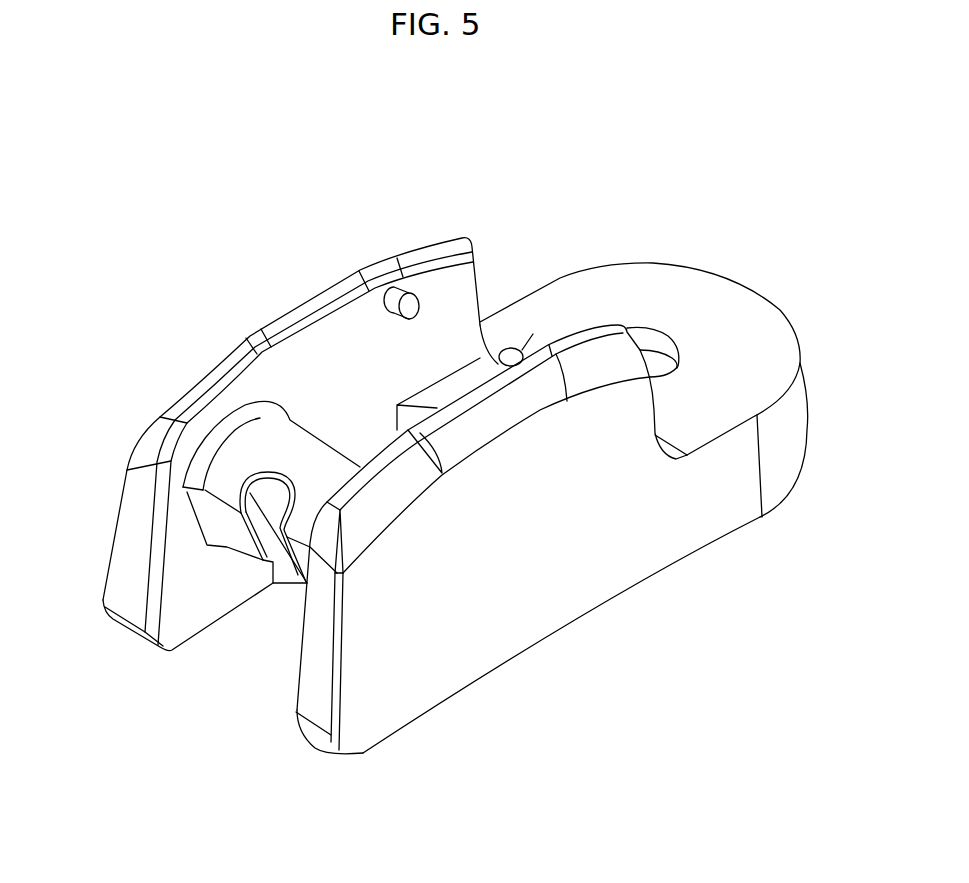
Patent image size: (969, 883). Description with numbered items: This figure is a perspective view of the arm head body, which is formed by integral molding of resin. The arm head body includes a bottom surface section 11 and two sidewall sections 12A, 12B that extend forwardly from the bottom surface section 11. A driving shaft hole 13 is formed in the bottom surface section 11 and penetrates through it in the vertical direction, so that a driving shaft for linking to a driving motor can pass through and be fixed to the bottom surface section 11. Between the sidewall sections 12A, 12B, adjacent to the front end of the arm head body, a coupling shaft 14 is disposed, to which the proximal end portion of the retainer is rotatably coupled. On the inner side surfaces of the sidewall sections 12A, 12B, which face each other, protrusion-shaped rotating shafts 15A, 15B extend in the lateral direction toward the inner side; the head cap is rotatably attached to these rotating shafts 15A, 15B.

The bottom surface section 11 is at (608, 263).
The sidewall section 12A is at (173, 402).
The sidewall section 12B is at (483, 515).
The driving shaft hole 13 is at (667, 345).
The coupling shaft 14 is at (255, 455).
The rotating shaft 15A is at (417, 297).
The rotating shaft 15B is at (518, 348).